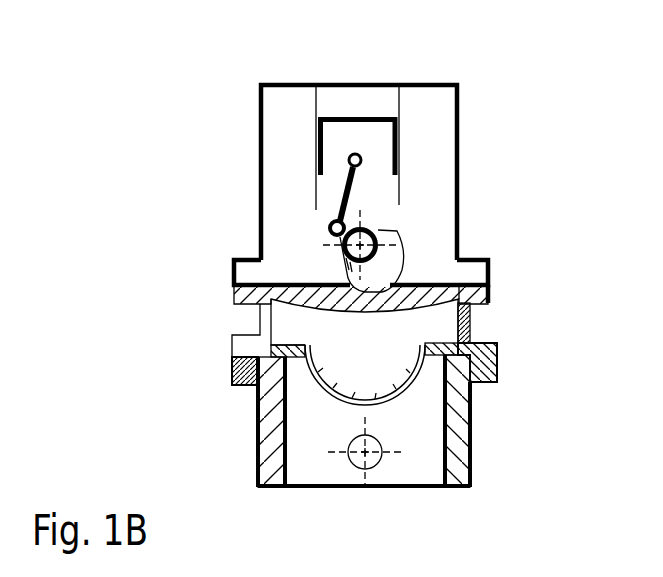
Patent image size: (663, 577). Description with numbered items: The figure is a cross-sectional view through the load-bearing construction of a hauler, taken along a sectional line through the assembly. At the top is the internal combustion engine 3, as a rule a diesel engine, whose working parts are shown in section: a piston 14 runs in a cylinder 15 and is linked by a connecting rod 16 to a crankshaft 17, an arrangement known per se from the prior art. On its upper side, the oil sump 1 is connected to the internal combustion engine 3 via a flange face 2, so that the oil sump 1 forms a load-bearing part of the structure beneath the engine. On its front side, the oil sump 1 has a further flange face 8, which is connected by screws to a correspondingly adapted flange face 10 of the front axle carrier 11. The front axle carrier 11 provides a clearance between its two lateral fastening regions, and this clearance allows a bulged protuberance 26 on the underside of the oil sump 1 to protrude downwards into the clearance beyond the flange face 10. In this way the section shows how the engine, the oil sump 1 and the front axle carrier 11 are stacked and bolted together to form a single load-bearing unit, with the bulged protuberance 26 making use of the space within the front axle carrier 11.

The oil sump 1 is at (240, 300).
The flange face 2 is at (486, 279).
The internal combustion engine 3 is at (261, 108).
The flange face 8 is at (245, 386).
The flange face 10 is at (248, 345).
The front axle carrier 11 is at (460, 465).
The piston 14 is at (348, 118).
The cylinder 15 is at (310, 193).
The connecting rod 16 is at (360, 198).
The crankshaft 17 is at (340, 243).
The bulged protuberance 26 is at (362, 380).